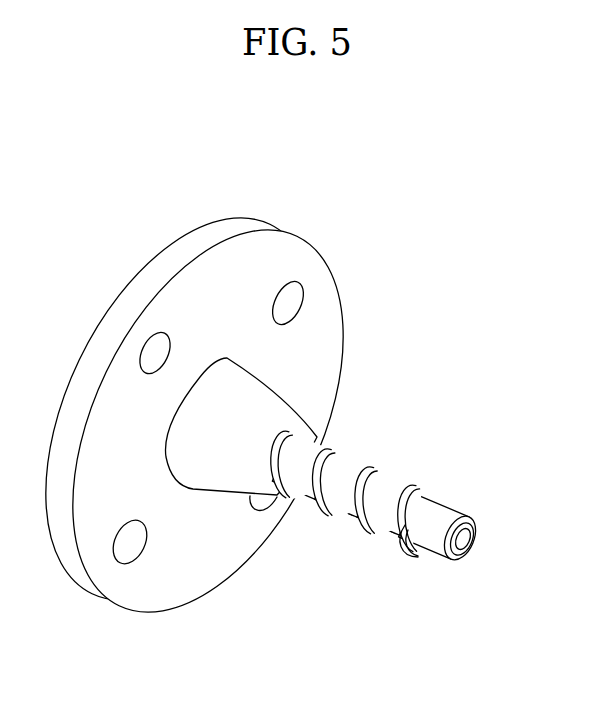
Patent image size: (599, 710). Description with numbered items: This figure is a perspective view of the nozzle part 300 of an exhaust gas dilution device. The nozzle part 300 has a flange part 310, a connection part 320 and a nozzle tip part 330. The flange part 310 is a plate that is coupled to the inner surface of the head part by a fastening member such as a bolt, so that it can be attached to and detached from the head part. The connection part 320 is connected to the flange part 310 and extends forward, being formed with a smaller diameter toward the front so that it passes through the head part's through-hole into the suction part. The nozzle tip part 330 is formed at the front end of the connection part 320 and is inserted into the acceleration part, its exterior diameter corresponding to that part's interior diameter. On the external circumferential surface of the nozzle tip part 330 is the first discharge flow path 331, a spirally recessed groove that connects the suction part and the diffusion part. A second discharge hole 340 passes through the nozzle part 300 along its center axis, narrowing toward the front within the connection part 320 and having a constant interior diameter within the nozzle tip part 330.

The nozzle part 300 is at (262, 397).
The flange part 310 is at (240, 220).
The connection part 320 is at (265, 407).
The nozzle tip part 330 is at (397, 511).
The first discharge flow path 331 is at (377, 472).
The second discharge hole 340 is at (474, 544).